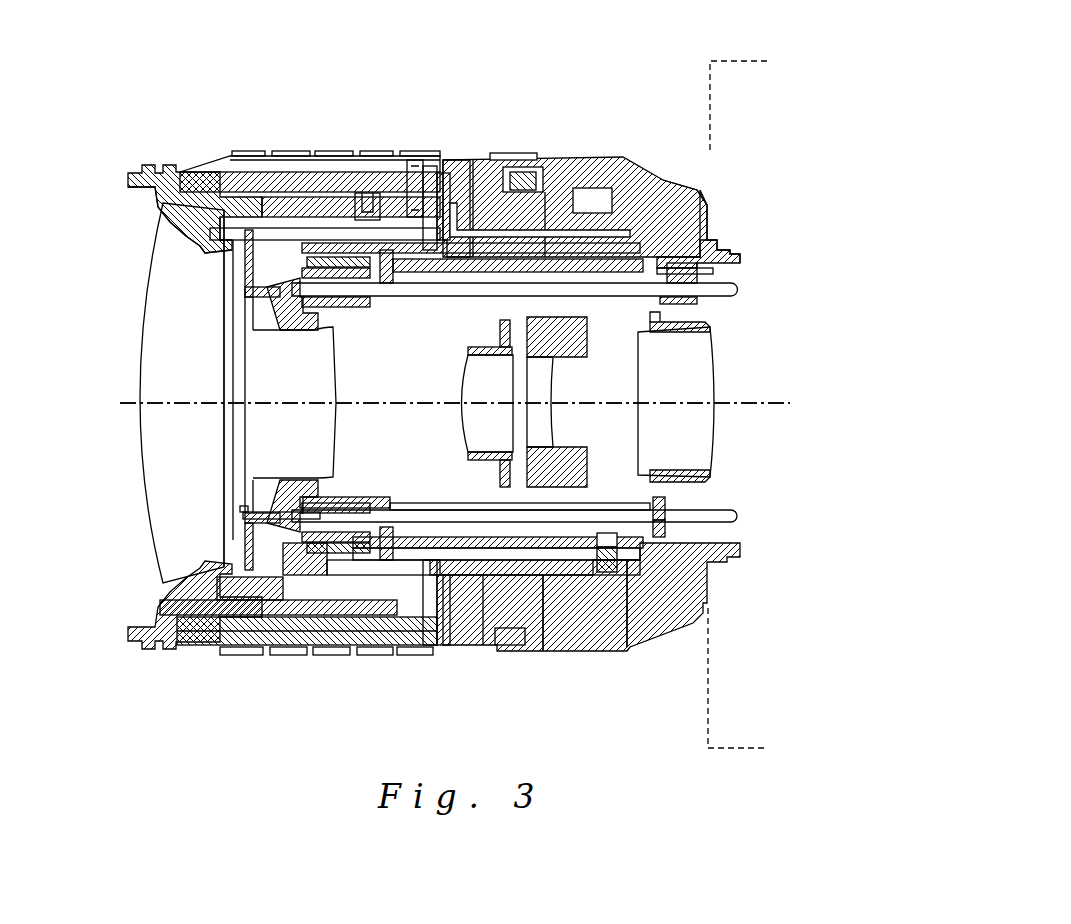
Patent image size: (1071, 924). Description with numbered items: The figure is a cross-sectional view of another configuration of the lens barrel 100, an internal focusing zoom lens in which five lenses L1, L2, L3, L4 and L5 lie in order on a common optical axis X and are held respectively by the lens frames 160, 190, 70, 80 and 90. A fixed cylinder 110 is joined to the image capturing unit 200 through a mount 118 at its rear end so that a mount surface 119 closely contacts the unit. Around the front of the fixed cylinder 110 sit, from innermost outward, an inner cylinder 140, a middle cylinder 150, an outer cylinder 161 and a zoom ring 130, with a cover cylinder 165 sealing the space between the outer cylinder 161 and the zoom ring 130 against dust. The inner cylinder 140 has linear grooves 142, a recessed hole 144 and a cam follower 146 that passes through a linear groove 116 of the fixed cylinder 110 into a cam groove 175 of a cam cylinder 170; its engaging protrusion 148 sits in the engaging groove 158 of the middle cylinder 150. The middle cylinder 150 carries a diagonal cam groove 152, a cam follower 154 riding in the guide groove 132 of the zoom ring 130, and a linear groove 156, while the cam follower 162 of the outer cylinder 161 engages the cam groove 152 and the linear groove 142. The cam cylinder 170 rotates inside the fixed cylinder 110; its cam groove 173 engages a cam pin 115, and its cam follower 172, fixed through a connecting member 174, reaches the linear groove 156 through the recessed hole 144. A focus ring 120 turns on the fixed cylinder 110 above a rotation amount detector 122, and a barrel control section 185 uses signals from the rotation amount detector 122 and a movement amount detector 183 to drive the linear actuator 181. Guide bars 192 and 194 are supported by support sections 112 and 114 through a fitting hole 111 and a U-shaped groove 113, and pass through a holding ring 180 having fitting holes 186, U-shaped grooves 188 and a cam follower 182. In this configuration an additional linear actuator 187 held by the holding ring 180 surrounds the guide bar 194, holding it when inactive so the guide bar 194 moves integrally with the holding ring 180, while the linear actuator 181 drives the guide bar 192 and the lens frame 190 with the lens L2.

The lens barrel 100 is at (95, 32).
The image capturing unit 200 is at (745, 70).
The optical axis X is at (780, 396).
The middle cylinder 150 is at (183, 167).
The cover cylinder 165 is at (227, 167).
The outer cylinder 161 is at (263, 165).
The guide groove 132 is at (330, 165).
The cam groove 152 is at (393, 165).
The cam follower 154 is at (423, 167).
The zoom ring 130 is at (373, 167).
The cam follower 162 is at (317, 170).
The cam groove 173 is at (455, 175).
The cam pin 115 is at (450, 180).
The rotation amount detector 122 is at (560, 182).
The focus ring 120 is at (515, 155).
The fixed cylinder 110 is at (650, 178).
The barrel control section 185 is at (712, 192).
The mount 118 is at (735, 248).
The movement amount detector 183 is at (737, 270).
The linear groove 142 is at (340, 242).
The support section 112 is at (407, 283).
The cam cylinder 170 is at (605, 270).
The fitting hole 111 is at (740, 290).
The guide bar 192 is at (737, 297).
The fitting holes 186 is at (360, 310).
The cam follower 182 is at (300, 333).
The U-shaped grooves 188 is at (318, 492).
The holding ring 180 is at (245, 295).
The linear actuator 181 is at (255, 335).
The linear actuator 187 is at (243, 515).
The lens frame 190 is at (225, 320).
The lens frame 160 is at (160, 205).
The engaging groove 158 is at (186, 222).
The engaging protrusion 148 is at (205, 245).
The inner cylinder 140 is at (220, 255).
The lens L1 is at (150, 443).
The lens L2 is at (330, 410).
The lens L3 is at (468, 440).
The lens frame 70 is at (470, 350).
The lens L4 is at (548, 430).
The lens frame 80 is at (570, 350).
The lens L5 is at (705, 440).
The lens frame 90 is at (712, 335).
The U-shaped groove 113 is at (425, 500).
The guide bar 194 is at (740, 516).
The support section 114 is at (665, 540).
The mount surface 119 is at (710, 582).
The cam groove 175 is at (607, 575).
The linear groove 116 is at (583, 580).
The cam follower 146 is at (645, 585).
The linear groove 156 is at (445, 645).
The cam follower 172 is at (330, 645).
The recessed hole 144 is at (385, 648).
The connecting member 174 is at (280, 650).